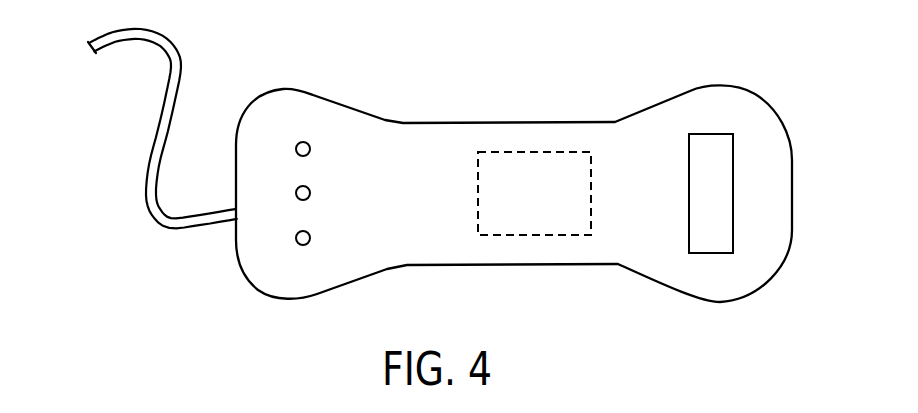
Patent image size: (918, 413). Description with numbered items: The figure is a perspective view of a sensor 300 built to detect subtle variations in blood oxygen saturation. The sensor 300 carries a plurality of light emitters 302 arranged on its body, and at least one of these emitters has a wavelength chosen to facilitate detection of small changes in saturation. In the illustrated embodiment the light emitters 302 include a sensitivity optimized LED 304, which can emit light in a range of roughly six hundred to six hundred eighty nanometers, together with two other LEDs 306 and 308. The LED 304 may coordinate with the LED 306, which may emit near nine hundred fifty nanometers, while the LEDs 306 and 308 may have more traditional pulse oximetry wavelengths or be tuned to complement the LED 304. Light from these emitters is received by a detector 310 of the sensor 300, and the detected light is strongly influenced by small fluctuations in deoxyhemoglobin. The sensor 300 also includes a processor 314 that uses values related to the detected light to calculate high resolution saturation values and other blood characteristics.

The sensor 300 is at (440, 183).
The light emitters 302 is at (291, 302).
The sensitivity optimized LED 304 is at (310, 193).
The LED 306 is at (310, 149).
The LED 308 is at (310, 238).
The detector 310 is at (707, 189).
The processor 314 is at (535, 152).